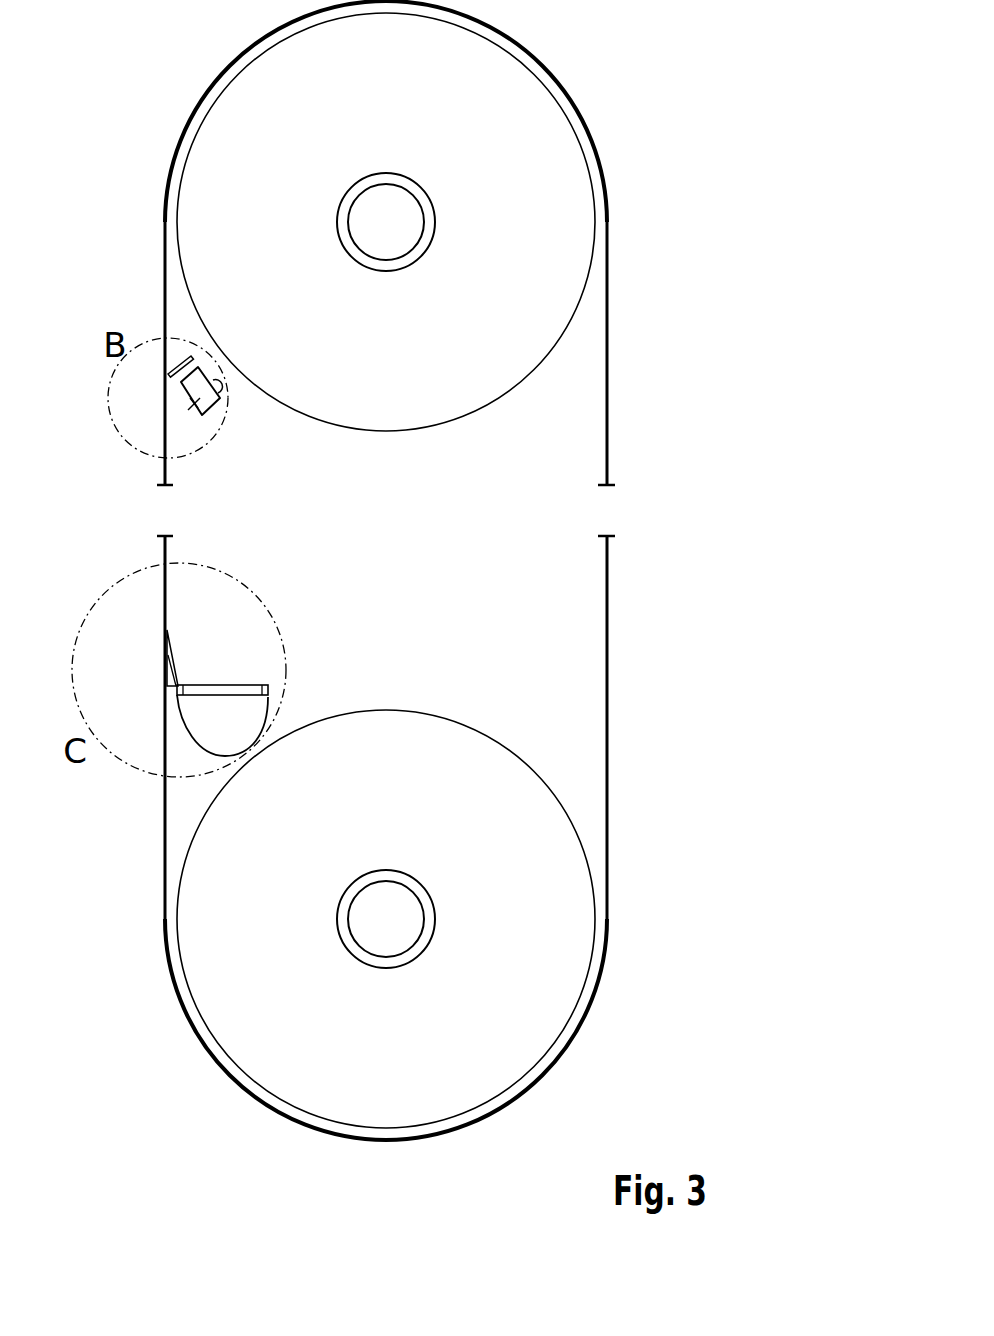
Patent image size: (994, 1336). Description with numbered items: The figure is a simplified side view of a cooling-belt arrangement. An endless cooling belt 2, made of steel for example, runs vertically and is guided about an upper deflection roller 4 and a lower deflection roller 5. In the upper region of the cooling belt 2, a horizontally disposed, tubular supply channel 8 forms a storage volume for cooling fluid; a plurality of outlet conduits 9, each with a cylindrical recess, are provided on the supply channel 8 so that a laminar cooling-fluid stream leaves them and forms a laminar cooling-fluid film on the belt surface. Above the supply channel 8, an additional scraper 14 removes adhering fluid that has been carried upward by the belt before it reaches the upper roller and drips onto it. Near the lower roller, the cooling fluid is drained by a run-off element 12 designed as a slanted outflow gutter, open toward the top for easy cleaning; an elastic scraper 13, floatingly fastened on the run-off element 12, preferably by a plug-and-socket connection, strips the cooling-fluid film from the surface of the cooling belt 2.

The cooling belt 2 is at (607, 363).
The upper deflection roller 4 is at (563, 163).
The lower deflection roller 5 is at (565, 960).
The tubular supply channel 8 is at (196, 402).
The outlet conduits 9 is at (183, 383).
The run-off element 12 is at (217, 727).
The elastic scraper 13 is at (165, 678).
The scraper 14 is at (177, 363).